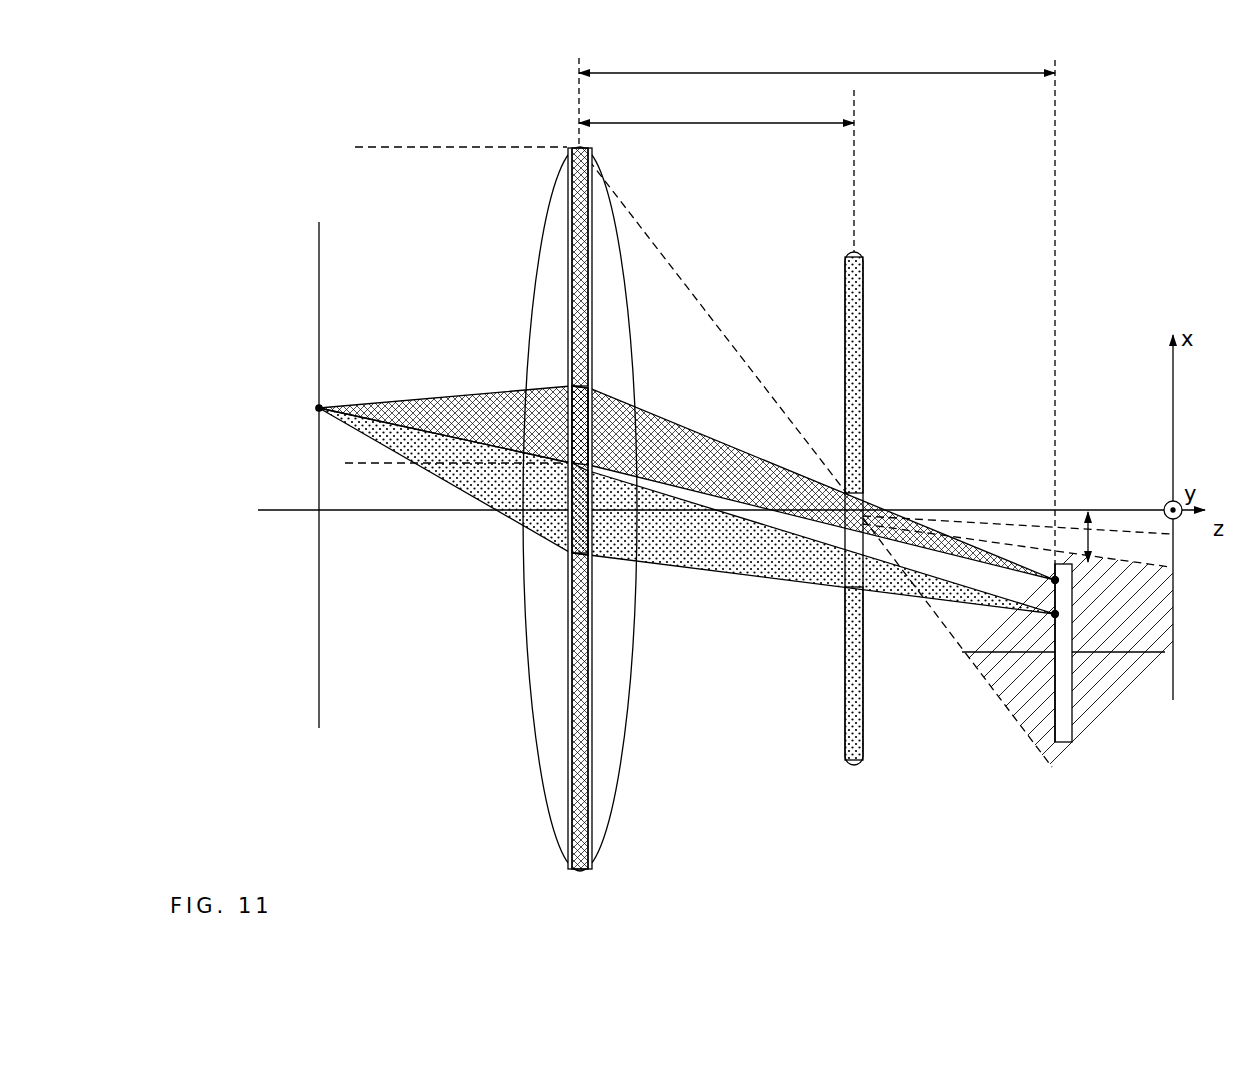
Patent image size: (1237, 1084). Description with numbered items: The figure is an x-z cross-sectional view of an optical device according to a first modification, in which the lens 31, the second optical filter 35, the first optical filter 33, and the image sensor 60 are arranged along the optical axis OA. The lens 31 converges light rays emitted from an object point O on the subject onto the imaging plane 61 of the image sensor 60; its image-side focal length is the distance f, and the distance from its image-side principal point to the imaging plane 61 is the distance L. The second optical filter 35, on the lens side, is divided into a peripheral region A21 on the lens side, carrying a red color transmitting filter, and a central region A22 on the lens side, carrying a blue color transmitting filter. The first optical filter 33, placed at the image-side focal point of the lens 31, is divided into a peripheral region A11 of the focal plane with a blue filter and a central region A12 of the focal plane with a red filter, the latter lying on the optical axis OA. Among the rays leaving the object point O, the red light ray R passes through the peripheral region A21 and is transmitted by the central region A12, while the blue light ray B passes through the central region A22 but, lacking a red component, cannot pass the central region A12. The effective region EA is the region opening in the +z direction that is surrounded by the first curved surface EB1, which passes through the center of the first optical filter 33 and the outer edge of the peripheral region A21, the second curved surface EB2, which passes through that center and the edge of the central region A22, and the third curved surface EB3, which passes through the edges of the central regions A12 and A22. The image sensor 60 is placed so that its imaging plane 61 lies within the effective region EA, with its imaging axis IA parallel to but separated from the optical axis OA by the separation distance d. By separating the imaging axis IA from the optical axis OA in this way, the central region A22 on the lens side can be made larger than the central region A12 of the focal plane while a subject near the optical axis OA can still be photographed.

The lens 31 is at (600, 207).
The first optical filter 33 is at (890, 543).
The second optical filter 35 is at (636, 541).
The image sensor 60 is at (1039, 684).
The imaging plane 61 is at (1052, 736).
The peripheral region of the focal plane A11 is at (863, 355).
The central region of the focal plane A12 is at (850, 496).
The peripheral region on the lens side A21 is at (590, 315).
The central region on the lens side A22 is at (590, 548).
The light ray R is at (455, 395).
The light ray B is at (457, 470).
The object point O is at (319, 408).
The optical axis OA is at (270, 512).
The first curved surface EB1 is at (990, 700).
The second curved surface EB2 is at (1022, 536).
The third curved surface EB3 is at (1125, 532).
The imaging axis IA is at (1147, 654).
The effective region EA is at (1116, 762).
The distance L is at (817, 60).
The distance f is at (716, 110).
The separation distance d is at (1098, 537).